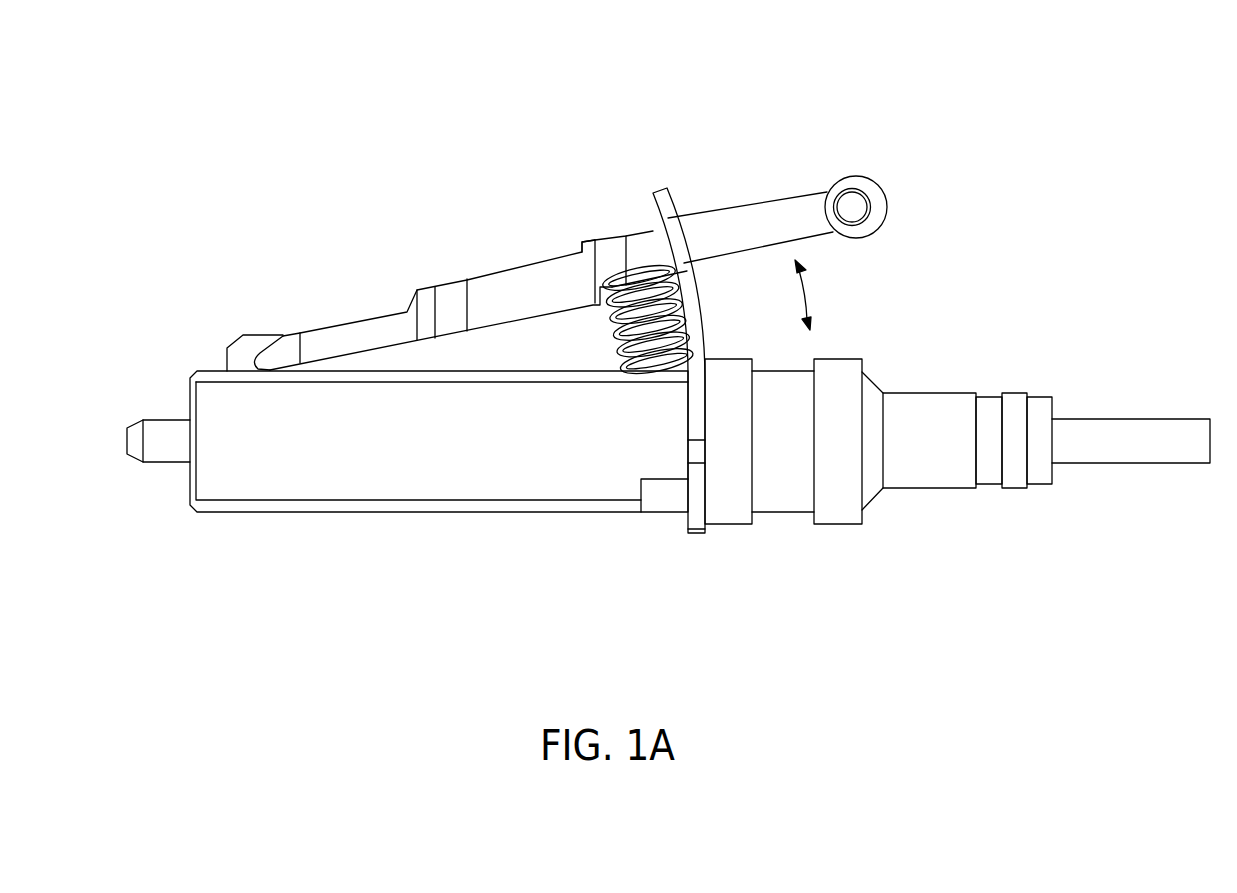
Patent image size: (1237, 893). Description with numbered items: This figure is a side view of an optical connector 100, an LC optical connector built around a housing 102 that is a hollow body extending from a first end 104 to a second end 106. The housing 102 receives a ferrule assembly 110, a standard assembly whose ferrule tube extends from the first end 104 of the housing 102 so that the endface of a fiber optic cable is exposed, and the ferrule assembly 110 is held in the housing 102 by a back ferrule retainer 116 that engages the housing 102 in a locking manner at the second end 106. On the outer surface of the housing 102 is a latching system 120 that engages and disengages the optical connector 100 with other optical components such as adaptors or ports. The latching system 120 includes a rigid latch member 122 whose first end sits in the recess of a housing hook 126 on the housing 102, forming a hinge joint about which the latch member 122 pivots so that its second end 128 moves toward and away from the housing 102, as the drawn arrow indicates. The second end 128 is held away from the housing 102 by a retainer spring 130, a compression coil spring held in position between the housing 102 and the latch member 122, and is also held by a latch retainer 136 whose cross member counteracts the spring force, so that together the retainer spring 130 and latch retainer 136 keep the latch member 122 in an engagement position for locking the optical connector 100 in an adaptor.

The optical connector 100 is at (333, 133).
The housing 102 is at (428, 513).
The first end 104 is at (231, 513).
The second end 106 is at (617, 513).
The ferrule assembly 110 is at (1118, 418).
The back ferrule retainer 116 is at (835, 524).
The latching system 120 is at (549, 207).
The latch member 122 is at (585, 242).
The housing hook 126 is at (235, 338).
The second end 128 is at (785, 200).
The retainer spring 130 is at (612, 323).
The latch retainer 136 is at (675, 200).